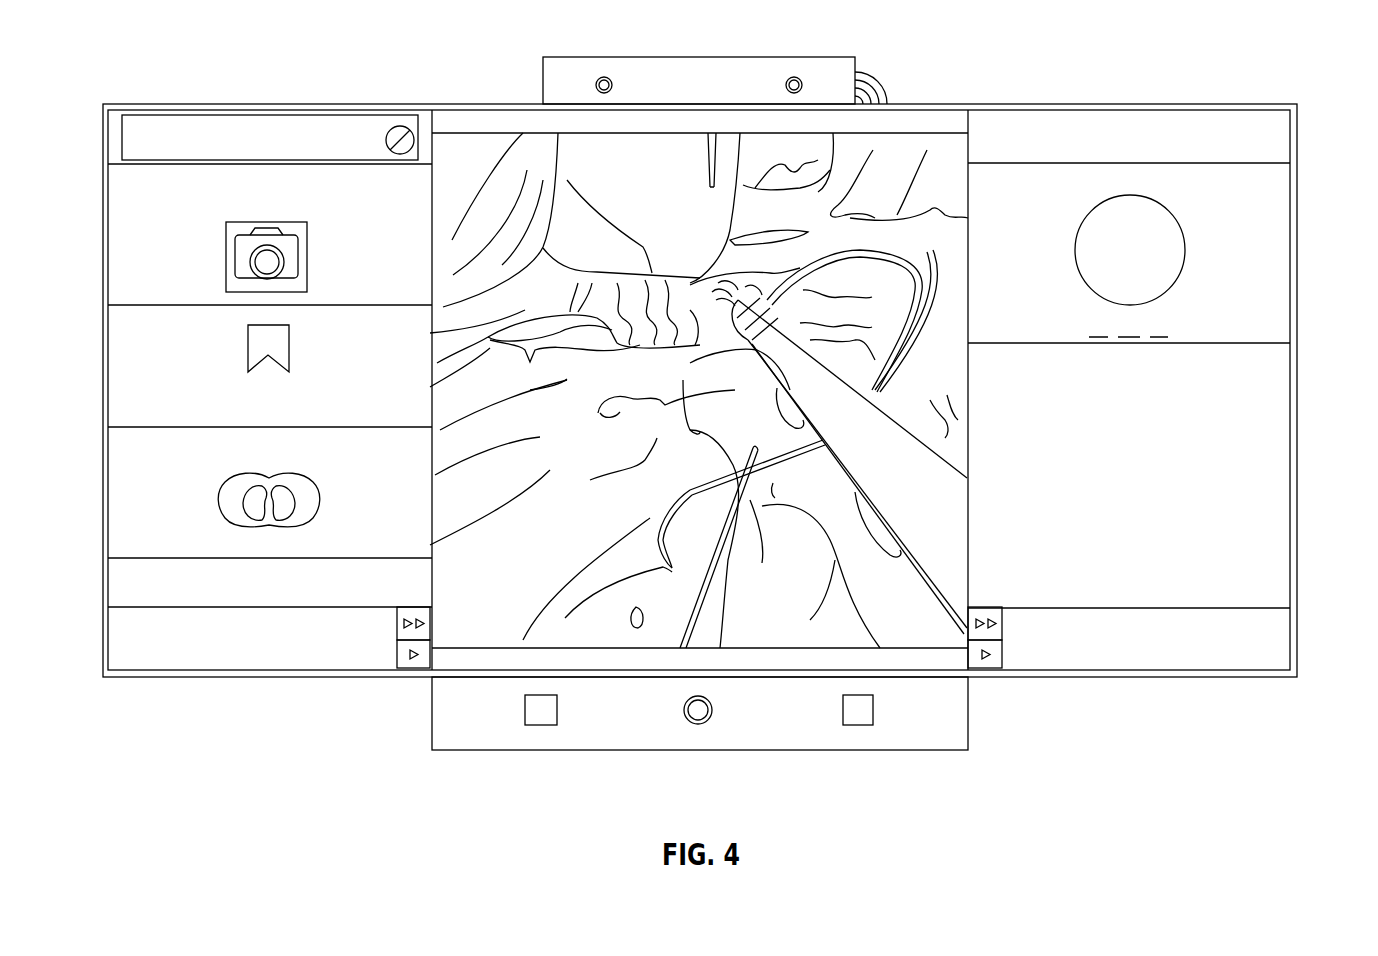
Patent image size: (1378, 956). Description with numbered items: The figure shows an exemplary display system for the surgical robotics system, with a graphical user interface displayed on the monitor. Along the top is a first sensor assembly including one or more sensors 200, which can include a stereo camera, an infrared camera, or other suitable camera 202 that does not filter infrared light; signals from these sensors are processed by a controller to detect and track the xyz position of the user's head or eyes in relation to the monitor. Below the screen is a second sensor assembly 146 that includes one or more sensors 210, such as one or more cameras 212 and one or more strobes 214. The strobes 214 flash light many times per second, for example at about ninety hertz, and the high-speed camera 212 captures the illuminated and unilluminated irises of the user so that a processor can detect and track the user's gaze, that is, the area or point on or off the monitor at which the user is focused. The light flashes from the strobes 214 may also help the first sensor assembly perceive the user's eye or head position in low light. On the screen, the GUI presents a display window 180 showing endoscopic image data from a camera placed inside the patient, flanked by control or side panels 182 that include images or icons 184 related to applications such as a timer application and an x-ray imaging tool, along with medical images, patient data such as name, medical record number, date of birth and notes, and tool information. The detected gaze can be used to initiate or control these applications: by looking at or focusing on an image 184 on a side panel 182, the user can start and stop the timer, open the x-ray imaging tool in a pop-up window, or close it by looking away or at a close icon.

The second sensor assembly 146 is at (936, 758).
The display window 180 is at (263, 104).
The side panel 182 is at (115, 134).
The image 184 is at (190, 124).
The sensor 200 is at (543, 85).
The camera 202 is at (604, 72).
The sensor 210 is at (654, 712).
The camera 212 is at (697, 727).
The strobe light 214 is at (543, 726).